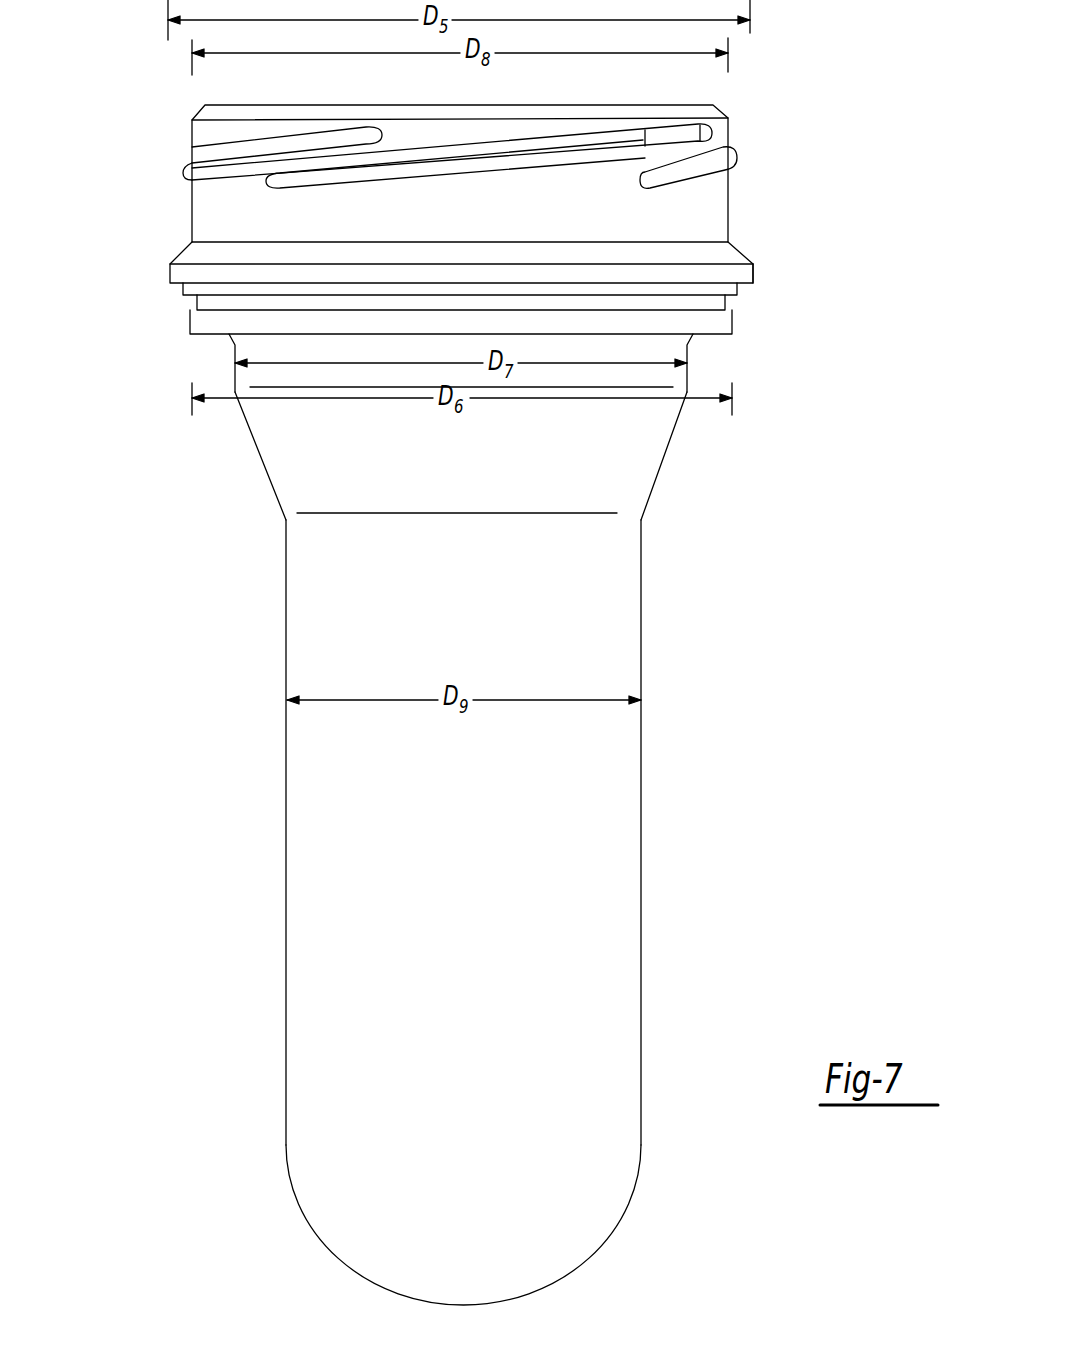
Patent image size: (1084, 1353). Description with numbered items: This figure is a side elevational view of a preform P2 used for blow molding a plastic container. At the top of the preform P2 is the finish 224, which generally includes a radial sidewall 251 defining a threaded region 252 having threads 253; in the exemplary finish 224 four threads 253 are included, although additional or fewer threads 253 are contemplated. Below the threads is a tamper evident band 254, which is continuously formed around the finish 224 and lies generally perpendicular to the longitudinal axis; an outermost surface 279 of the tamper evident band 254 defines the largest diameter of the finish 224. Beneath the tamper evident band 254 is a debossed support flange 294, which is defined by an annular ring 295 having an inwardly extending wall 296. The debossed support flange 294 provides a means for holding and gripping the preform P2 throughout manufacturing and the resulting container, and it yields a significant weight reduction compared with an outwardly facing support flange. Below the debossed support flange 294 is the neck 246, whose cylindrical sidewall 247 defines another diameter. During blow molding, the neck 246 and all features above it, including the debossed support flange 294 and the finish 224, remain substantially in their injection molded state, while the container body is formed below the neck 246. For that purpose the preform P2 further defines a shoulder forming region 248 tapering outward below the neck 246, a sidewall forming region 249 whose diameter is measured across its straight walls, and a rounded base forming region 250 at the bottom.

The finish 224 is at (128, 160).
The radial sidewall 251 is at (430, 130).
The threaded region 252 is at (763, 128).
The threads 253 is at (445, 165).
The tamper evident (TE) band 254 is at (168, 277).
The outermost surface 279 is at (753, 272).
The inwardly extending wall 296 is at (278, 337).
The debossed support flange 294 is at (712, 335).
The annular ring 295 is at (190, 327).
The neck 246 is at (235, 357).
The cylindrical sidewall 247 is at (547, 344).
The shoulder forming region 248 is at (662, 462).
The preform P2 is at (760, 575).
The sidewall forming region 249 is at (643, 646).
The base forming region 250 is at (643, 1175).